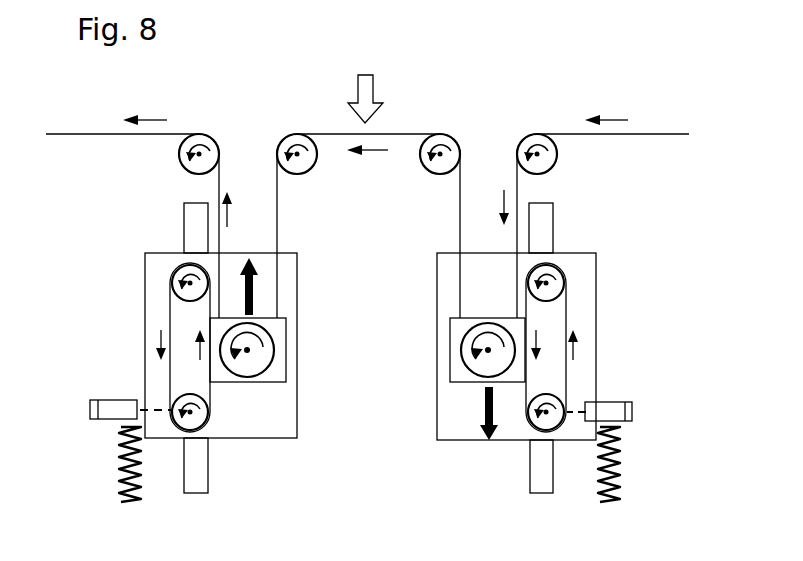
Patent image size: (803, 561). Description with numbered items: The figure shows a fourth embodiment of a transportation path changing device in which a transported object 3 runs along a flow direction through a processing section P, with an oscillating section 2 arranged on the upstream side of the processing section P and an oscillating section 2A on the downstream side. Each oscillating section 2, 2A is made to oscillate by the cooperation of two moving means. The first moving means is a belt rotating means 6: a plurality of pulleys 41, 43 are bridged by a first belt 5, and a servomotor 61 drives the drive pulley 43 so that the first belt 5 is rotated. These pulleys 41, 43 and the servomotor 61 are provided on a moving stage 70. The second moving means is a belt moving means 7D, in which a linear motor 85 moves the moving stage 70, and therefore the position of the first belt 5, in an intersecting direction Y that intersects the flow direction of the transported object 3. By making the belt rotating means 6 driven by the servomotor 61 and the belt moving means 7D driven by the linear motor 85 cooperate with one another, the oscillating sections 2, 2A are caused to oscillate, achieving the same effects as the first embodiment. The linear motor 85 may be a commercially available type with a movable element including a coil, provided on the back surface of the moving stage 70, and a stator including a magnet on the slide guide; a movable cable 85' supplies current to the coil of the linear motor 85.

The web (medium) 3 is at (650, 134).
The processing section P is at (370, 88).
The belt moving means 7D is at (298, 270).
The moving stage 70 is at (260, 425).
The belt rotating means 6 is at (163, 315).
The pulley 41 is at (172, 288).
The drive pulley 43 is at (208, 410).
The first belt 5 is at (168, 383).
The linear motor 85 is at (367, 349).
The oscillating section 2A is at (285, 370).
The oscillating section 2 is at (450, 373).
The servomotor 61 is at (90, 410).
The movable cable 85' is at (375, 483).
The intersecting direction Y is at (737, 287).